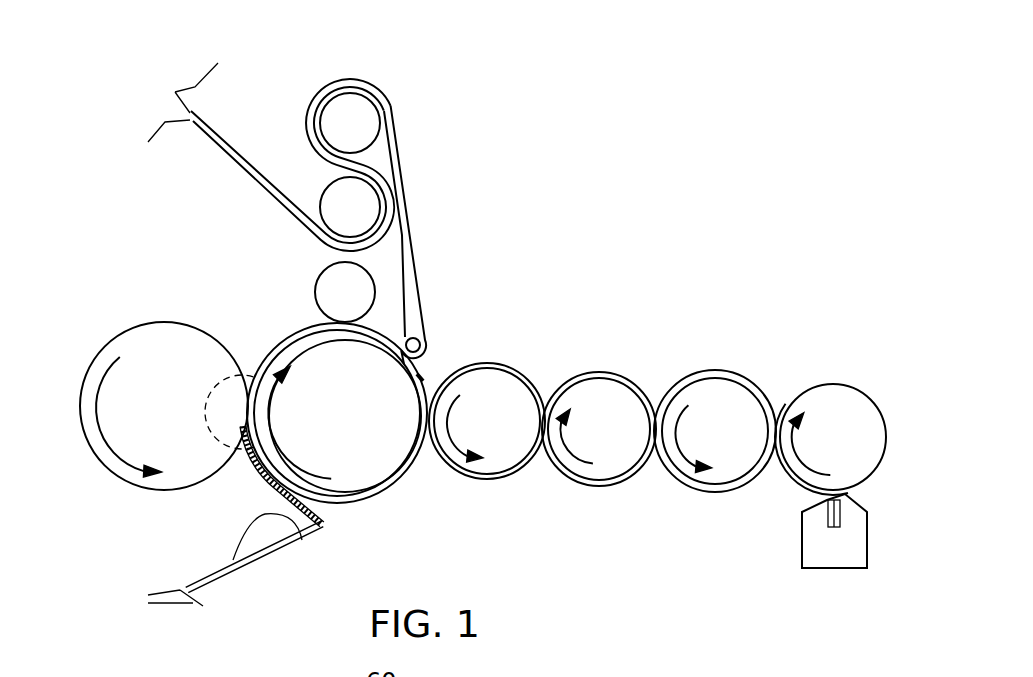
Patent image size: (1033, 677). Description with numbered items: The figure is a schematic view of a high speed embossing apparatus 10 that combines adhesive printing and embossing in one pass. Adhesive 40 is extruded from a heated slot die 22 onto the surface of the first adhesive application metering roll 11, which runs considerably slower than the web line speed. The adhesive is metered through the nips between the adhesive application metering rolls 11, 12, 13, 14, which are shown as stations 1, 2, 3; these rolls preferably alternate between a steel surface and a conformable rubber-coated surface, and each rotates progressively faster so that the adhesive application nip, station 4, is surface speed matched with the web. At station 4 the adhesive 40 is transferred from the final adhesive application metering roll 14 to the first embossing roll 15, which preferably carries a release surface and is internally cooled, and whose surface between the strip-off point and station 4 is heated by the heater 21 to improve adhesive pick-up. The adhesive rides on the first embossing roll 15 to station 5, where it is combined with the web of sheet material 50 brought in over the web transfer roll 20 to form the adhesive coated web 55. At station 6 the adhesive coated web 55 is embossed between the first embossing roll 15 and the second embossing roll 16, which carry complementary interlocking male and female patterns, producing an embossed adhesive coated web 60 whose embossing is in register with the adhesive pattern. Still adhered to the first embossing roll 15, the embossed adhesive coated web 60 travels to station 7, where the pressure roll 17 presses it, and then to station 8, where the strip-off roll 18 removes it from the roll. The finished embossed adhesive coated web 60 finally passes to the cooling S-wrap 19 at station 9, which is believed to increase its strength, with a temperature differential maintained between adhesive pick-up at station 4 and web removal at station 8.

The station 1 is at (765, 478).
The station 2 is at (651, 485).
The station 3 is at (532, 475).
The station 4 is at (424, 481).
The station 5 is at (341, 530).
The station 6 is at (246, 485).
The station 7 is at (306, 311).
The station 8 is at (404, 314).
The station 9 is at (414, 156).
The high speed embossing apparatus 10 is at (587, 295).
The first adhesive application metering roll 11 is at (827, 413).
The adhesive application metering roll 12 is at (712, 412).
The adhesive application metering roll 13 is at (577, 476).
The final adhesive application metering roll 14 is at (480, 466).
The first embossing roll 15 is at (368, 476).
The second embossing roll 16 is at (160, 480).
The pressure roll 17 is at (331, 281).
The strip-off roll 18 is at (386, 314).
The S-wrap 19 is at (322, 213).
The web transfer roll 20 is at (233, 560).
The heater 21 is at (447, 358).
The slot die 22 is at (848, 553).
The adhesive 40 is at (789, 493).
The web of sheet material 50 is at (290, 547).
The adhesive coated web 55 is at (180, 587).
The embossed adhesive coated web 60 is at (196, 118).